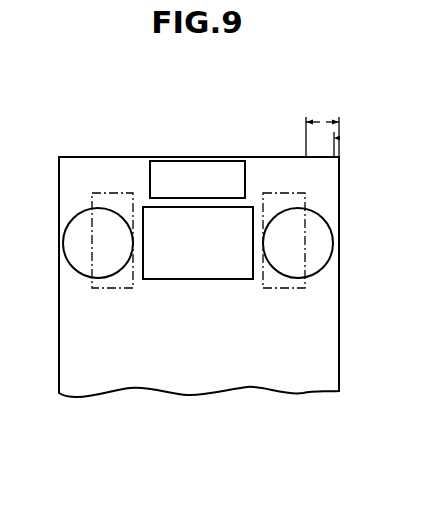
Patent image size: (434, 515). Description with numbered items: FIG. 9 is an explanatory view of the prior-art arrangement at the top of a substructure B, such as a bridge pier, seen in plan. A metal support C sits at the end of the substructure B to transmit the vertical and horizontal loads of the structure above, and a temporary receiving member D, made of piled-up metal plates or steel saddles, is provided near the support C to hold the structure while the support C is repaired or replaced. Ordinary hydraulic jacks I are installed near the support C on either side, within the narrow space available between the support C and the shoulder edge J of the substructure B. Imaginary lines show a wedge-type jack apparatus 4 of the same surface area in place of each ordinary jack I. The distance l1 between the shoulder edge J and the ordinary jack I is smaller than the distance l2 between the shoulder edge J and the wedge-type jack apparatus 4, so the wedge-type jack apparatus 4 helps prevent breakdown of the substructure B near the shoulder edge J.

The wedge-type jack apparatus 4 is at (88, 192).
The ordinary hydraulic jack I is at (76, 216).
The shoulder edge J is at (58, 255).
The substructure B is at (199, 277).
The support C is at (198, 243).
The temporary receiving member D is at (197, 179).
The distance between shoulder edge and ordinary jack l1 is at (339, 138).
The distance between shoulder edge and wedge-type jack apparatus l2 is at (322, 124).